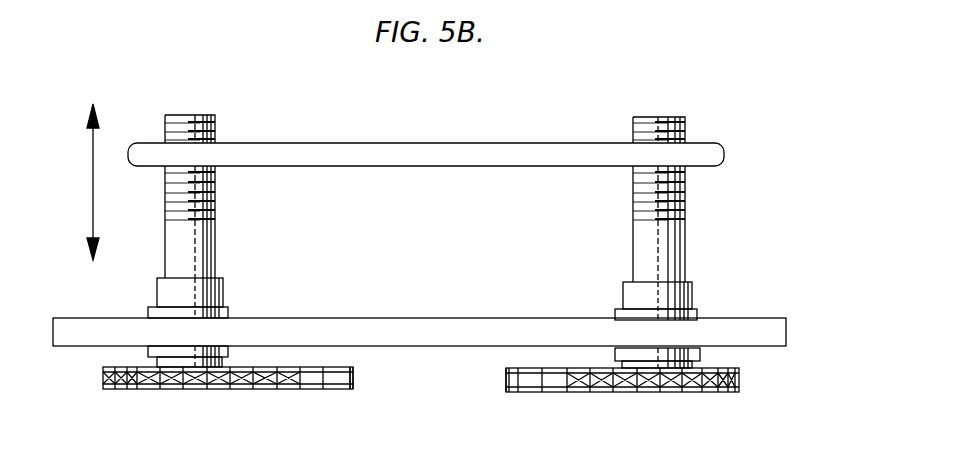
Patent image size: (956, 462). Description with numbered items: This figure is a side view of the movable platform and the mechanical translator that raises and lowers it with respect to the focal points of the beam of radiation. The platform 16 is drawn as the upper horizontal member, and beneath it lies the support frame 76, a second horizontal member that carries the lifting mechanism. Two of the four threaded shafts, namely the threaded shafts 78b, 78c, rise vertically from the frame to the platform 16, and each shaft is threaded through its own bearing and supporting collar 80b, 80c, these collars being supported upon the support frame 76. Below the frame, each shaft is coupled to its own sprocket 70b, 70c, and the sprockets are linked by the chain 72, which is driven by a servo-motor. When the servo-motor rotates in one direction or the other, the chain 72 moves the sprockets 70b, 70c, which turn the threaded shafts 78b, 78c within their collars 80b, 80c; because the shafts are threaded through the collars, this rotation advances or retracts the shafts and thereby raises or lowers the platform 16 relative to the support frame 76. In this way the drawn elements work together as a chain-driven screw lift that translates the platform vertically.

The platform 16 is at (433, 143).
The support frame 76 is at (773, 320).
The threaded shaft 78b is at (670, 117).
The threaded shaft 78c is at (200, 115).
The bearing and supporting collar 80b is at (623, 295).
The bearing and supporting collar 80c is at (220, 295).
The sprocket 70b is at (672, 392).
The sprocket 70c is at (178, 390).
The chain 72 is at (506, 383).